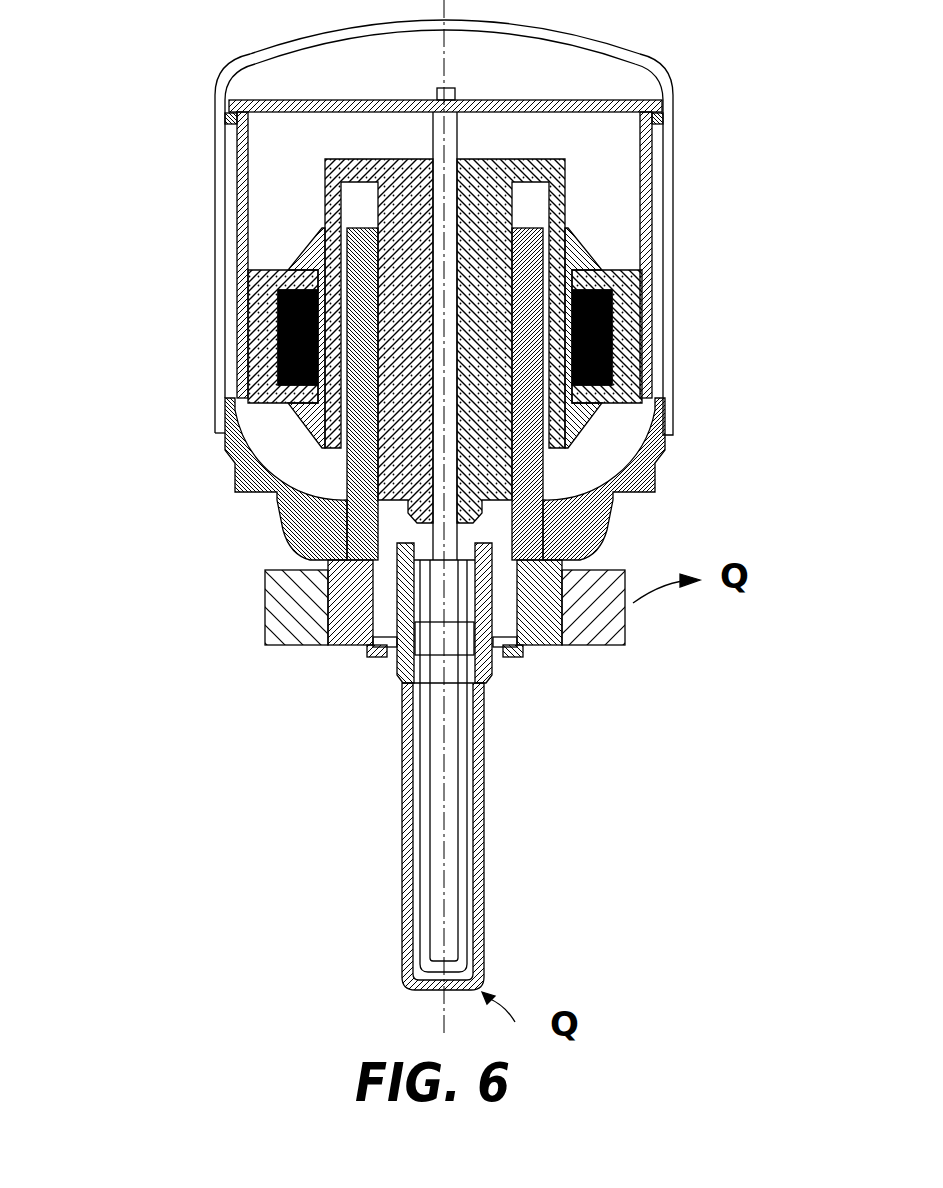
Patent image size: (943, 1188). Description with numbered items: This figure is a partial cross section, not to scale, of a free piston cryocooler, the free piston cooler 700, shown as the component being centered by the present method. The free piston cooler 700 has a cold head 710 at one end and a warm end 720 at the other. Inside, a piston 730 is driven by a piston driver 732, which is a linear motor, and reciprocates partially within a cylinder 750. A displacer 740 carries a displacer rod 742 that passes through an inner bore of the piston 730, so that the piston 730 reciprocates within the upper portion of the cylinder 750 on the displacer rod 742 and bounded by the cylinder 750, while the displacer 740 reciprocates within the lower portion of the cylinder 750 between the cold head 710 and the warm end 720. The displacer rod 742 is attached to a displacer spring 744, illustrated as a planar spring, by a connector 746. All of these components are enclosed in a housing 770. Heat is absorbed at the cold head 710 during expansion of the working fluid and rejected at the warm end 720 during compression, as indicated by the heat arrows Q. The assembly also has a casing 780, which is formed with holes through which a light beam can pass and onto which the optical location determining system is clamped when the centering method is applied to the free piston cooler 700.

The free piston cooler 700 is at (355, 800).
The cold head 710 is at (404, 987).
The warm end 720 is at (396, 552).
The piston 730 is at (327, 165).
The piston driver 732 is at (305, 259).
The displacer 740 is at (458, 972).
The displacer rod 742 is at (457, 148).
The displacer spring 744 is at (600, 98).
The connector 746 is at (433, 97).
The cylinder 750 is at (500, 530).
The housing 770 is at (213, 393).
The casing 780 is at (250, 234).